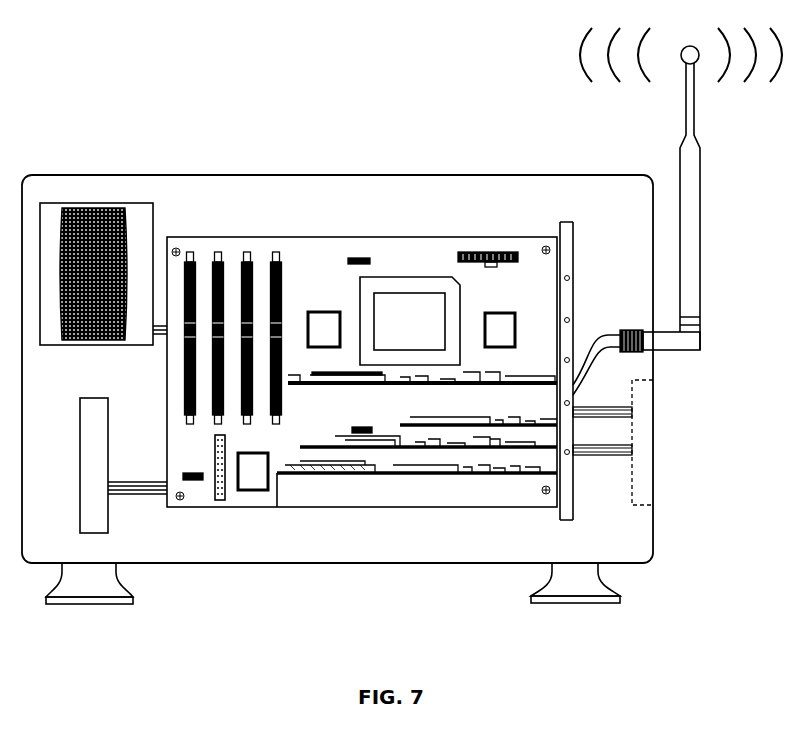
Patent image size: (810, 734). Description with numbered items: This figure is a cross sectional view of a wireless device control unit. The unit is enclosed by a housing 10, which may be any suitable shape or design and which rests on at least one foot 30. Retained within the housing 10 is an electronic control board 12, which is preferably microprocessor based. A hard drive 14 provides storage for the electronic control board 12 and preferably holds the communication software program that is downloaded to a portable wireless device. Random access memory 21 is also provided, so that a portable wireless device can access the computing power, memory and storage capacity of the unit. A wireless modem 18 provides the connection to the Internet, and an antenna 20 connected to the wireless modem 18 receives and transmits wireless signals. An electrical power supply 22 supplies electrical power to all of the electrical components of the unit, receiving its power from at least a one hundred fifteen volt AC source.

The housing 10 is at (364, 156).
The electronic control board 12 is at (442, 237).
The hard drive 14 is at (80, 510).
The wireless modem 18 is at (325, 443).
The antenna 20 is at (685, 103).
The random access memory 21 is at (190, 252).
The electrical power supply 22 is at (98, 204).
The foot 30 is at (130, 590).